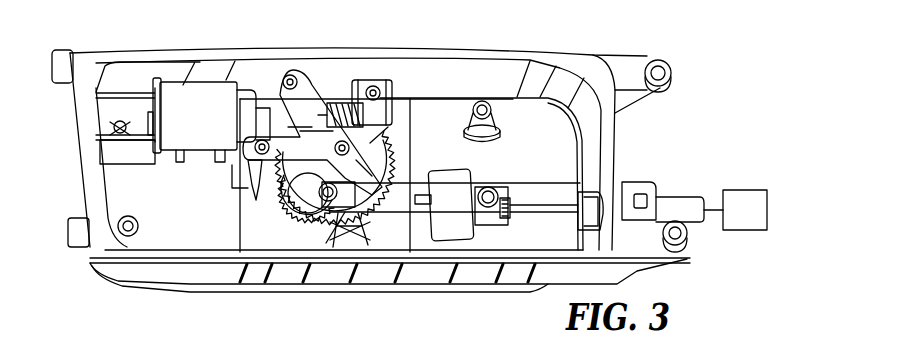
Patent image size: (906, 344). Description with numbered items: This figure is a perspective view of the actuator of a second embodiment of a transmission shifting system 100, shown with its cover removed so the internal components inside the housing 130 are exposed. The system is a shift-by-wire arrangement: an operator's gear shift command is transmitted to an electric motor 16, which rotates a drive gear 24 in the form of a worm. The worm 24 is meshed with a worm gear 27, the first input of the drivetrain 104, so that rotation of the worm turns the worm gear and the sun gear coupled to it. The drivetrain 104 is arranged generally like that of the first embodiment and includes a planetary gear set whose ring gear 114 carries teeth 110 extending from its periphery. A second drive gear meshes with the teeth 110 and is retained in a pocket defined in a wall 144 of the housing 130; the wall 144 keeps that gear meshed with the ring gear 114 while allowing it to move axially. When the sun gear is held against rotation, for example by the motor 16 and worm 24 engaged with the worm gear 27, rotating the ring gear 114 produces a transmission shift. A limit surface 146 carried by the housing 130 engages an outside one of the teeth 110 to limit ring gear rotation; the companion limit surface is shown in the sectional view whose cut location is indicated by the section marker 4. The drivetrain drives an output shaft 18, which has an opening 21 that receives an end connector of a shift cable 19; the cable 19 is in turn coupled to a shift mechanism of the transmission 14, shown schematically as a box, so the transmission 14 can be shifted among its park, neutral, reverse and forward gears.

The transmission shifting system 100 is at (710, 76).
The housing 130 is at (517, 54).
The electric motor 16 is at (212, 92).
The drivetrain 104 is at (346, 66).
The drive gear (worm) 24 is at (345, 103).
The output shaft 18 is at (325, 168).
The worm gear 27 is at (378, 150).
The section line for FIG. 4 is at (411, 137).
The ring gear 114 is at (397, 165).
The teeth 110 is at (272, 205).
The limit surface 146 is at (272, 198).
The wall 144 is at (316, 243).
The opening 21 is at (483, 186).
The shift cable 19 is at (550, 204).
The transmission 14 is at (748, 200).